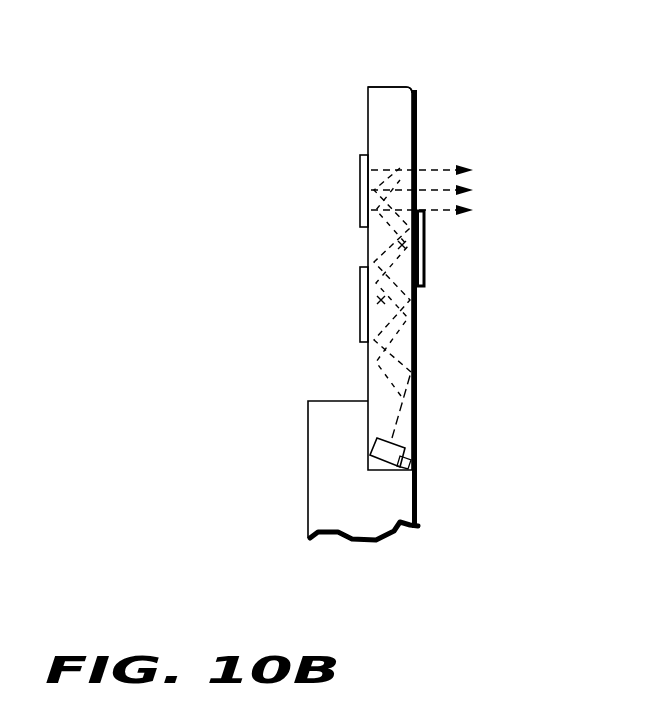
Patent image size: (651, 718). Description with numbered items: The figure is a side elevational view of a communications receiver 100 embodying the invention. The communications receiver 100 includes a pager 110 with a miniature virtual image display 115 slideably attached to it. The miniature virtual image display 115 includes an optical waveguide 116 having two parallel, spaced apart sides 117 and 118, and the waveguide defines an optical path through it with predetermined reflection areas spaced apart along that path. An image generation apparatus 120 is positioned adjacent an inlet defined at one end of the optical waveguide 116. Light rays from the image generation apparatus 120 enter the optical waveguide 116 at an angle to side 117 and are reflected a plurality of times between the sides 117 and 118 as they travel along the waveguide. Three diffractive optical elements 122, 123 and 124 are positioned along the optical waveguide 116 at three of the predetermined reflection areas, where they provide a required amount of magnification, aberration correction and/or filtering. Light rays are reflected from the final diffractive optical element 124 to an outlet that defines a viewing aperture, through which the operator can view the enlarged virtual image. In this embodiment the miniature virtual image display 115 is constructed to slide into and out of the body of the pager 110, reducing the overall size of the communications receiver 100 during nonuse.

The communications receiver 100 is at (523, 587).
The pager 110 is at (318, 470).
The miniature virtual image display 115 is at (384, 87).
The optical waveguide 116 is at (415, 107).
The side of optical waveguide 117 is at (418, 327).
The side of optical waveguide 118 is at (368, 122).
The image generation apparatus 120 is at (405, 463).
The diffractive optical element 122 is at (360, 298).
The diffractive optical element 123 is at (418, 248).
The final diffractive optical element 124 is at (360, 200).